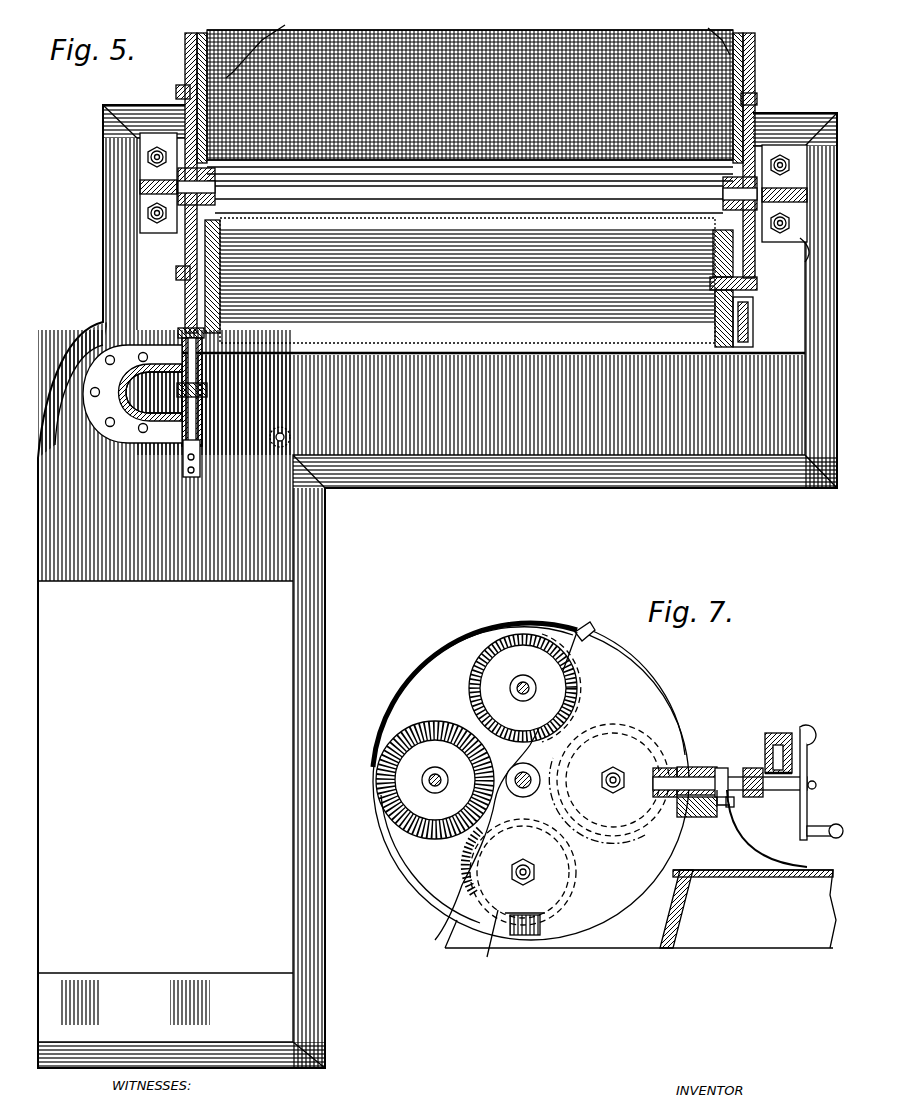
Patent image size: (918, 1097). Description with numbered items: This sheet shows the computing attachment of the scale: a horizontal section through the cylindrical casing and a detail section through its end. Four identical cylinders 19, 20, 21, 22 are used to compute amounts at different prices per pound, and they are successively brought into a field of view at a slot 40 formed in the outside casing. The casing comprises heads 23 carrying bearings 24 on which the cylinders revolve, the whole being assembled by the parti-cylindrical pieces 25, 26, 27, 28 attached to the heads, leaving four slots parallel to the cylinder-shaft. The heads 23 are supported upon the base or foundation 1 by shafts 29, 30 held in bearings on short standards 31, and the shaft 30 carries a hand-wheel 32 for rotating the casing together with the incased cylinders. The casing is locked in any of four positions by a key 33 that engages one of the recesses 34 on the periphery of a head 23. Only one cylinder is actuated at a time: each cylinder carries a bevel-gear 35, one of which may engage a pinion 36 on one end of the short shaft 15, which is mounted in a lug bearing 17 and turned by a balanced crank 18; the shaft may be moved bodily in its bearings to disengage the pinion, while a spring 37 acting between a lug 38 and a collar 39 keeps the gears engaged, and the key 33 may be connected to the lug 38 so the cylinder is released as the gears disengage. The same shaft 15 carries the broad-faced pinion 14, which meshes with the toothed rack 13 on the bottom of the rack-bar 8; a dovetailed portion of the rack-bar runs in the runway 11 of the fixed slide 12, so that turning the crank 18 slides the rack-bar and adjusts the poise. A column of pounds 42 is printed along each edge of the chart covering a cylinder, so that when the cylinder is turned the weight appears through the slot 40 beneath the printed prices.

In FIG. 5, the base or foundation 1 is at (437, 586).
In FIG. 7, the base or foundation 1 is at (748, 909).
In FIG. 7, the rack-bar 8 is at (803, 727).
In FIG. 7, the runway 11 is at (765, 740).
In FIG. 7, the fixed slide 12 is at (772, 733).
In FIG. 5, the toothed rack 13 is at (470, 95).
In FIG. 7, the toothed rack 13 is at (808, 770).
In FIG. 7, the pinion 14 is at (765, 780).
In FIG. 5, the short shaft 15 is at (198, 365).
In FIG. 7, the short shaft 15 is at (714, 768).
In FIG. 5, the bearing 17 is at (204, 375).
In FIG. 5, the crank 18 is at (203, 414).
In FIG. 7, the crank 18 is at (805, 822).
In FIG. 7, the cylinder 19 is at (435, 780).
In FIG. 7, the cylinder 20 is at (525, 688).
In FIG. 5, the cylinder 21 is at (467, 280).
In FIG. 7, the cylinder 21 is at (609, 783).
In FIG. 7, the cylinder 22 is at (523, 872).
In FIG. 5, the head 23 is at (186, 68).
In FIG. 7, the head 23 is at (410, 705).
In FIG. 5, the bearing 24 is at (178, 90).
In FIG. 7, the parti-cylindrical piece 25 is at (445, 645).
In FIG. 7, the parti-cylindrical piece 26 is at (580, 630).
In FIG. 5, the parti-cylindrical piece 27 is at (469, 203).
In FIG. 7, the parti-cylindrical piece 27 is at (610, 905).
In FIG. 5, the parti-cylindrical piece 28 is at (470, 171).
In FIG. 7, the parti-cylindrical piece 28 is at (403, 880).
In FIG. 5, the shaft 29 is at (212, 185).
In FIG. 7, the shaft 29 is at (528, 775).
In FIG. 5, the shaft 30 is at (725, 192).
In FIG. 5, the standard 31 is at (140, 205).
In FIG. 5, the hand-wheel 32 is at (804, 250).
In FIG. 7, the key 33 is at (690, 817).
In FIG. 7, the recess 34 is at (500, 935).
In FIG. 5, the bevel-gear 35 is at (222, 30).
In FIG. 7, the bevel-gear 35 is at (430, 735).
In FIG. 5, the pinion 36 is at (178, 334).
In FIG. 7, the pinion 36 is at (655, 790).
In FIG. 5, the spring 37 is at (201, 460).
In FIG. 7, the spring 37 is at (775, 850).
In FIG. 5, the lug 38 is at (132, 394).
In FIG. 7, the lug 38 is at (730, 808).
In FIG. 5, the collar 39 is at (207, 390).
In FIG. 7, the collar 39 is at (725, 770).
In FIG. 5, the slot 40 is at (470, 193).
In FIG. 5, the column of pounds 42 is at (478, 43).